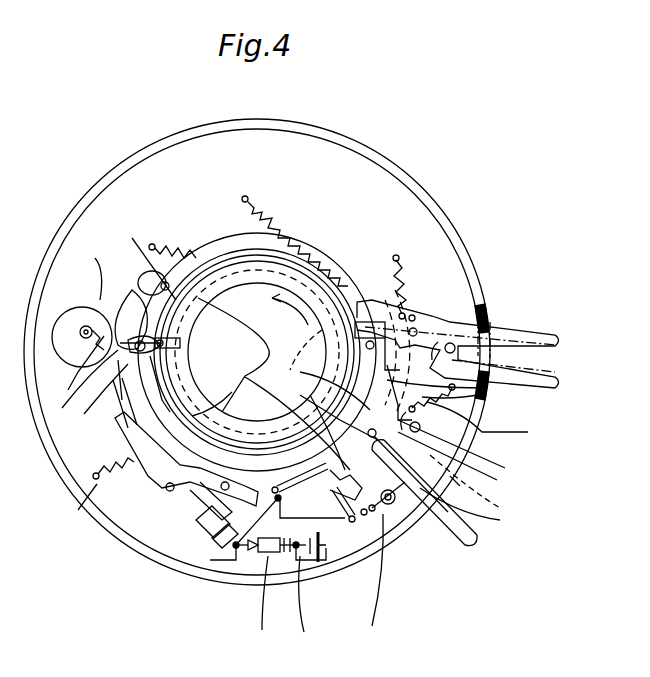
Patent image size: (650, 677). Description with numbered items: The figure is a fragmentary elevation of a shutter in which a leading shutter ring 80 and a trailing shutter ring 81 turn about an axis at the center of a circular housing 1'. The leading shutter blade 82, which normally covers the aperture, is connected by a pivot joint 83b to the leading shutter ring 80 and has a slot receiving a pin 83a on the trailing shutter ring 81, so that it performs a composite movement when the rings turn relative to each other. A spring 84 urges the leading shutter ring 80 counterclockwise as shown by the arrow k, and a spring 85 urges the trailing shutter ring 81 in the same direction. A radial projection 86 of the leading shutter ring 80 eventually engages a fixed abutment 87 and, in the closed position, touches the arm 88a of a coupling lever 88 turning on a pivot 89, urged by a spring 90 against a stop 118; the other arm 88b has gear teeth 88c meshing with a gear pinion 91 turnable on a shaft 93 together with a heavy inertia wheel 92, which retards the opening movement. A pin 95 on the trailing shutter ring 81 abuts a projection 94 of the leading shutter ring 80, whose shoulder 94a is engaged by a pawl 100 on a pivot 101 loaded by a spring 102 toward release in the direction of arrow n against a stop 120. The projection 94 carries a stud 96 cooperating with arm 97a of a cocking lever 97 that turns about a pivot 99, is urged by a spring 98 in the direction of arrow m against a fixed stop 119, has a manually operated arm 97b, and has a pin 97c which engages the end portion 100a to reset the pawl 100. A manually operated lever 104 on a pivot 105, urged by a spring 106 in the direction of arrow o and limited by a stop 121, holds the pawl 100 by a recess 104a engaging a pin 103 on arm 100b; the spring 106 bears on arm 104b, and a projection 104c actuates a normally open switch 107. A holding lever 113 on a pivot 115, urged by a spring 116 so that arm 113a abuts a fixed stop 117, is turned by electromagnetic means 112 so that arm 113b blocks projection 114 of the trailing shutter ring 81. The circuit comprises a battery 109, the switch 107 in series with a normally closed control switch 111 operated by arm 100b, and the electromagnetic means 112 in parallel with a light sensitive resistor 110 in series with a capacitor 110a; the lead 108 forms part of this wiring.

The circular housing 1' is at (257, 352).
The leading shutter ring 80 is at (316, 318).
The trailing shutter ring 81 is at (222, 247).
The leading shutter blade 82 is at (248, 382).
The pin 83a is at (146, 274).
The pivot joint 83b is at (206, 296).
The spring 84 is at (168, 244).
The spring 85 is at (262, 222).
The radial projection 86 is at (147, 258).
The fixed abutment 87 is at (132, 448).
The coupling lever 88 is at (86, 383).
The arm of coupling lever 88a is at (122, 366).
The other arm of coupling lever 88b is at (84, 271).
The gear teeth 88c is at (78, 368).
The pivot 89 is at (128, 318).
The spring 90 is at (103, 389).
The gear pinion 91 is at (84, 343).
The wheel 92 is at (80, 326).
The shaft 93 is at (93, 328).
The projection 94 is at (338, 372).
The shoulder 94a is at (501, 420).
The pin 95 is at (336, 394).
The projection stud 96 is at (354, 300).
The cocking lever 97 is at (418, 314).
The arm of cocking lever 97a is at (373, 300).
The other arm of cocking lever 97b is at (548, 380).
The pin 97c is at (432, 318).
The spring 98 is at (398, 256).
The pivot 99 is at (456, 346).
The pawl 100 is at (466, 458).
The end portion 100a is at (480, 394).
The arm of pawl 100b is at (456, 484).
The pivot 101 is at (421, 429).
The spring 102 is at (470, 441).
The pin 103 is at (268, 388).
The manually operated lever 104 is at (422, 520).
The recess 104a is at (460, 510).
The arm of manually operated lever 104b is at (462, 550).
The projection 104c is at (342, 509).
The pivot 105 is at (396, 520).
The spring 106 is at (378, 508).
The normally open switch 107 is at (308, 490).
The wire 108 is at (264, 598).
The battery 109 is at (304, 562).
The light sensitive resistor 110 is at (246, 562).
The capacitor 110a is at (311, 603).
The normally closed control switch 111 is at (302, 420).
The electromagnetic means 112 is at (196, 562).
The holding lever 113 is at (132, 470).
The arm of holding lever 113a is at (210, 502).
The arm of holding lever 113b is at (103, 460).
The projection 114 is at (110, 410).
The pivot 115 is at (166, 492).
The spring 116 is at (79, 508).
The fixed stop 117 is at (229, 487).
The stop 118 is at (181, 343).
The fixed stop 119 is at (412, 314).
The stop 120 is at (485, 486).
The stop 121 is at (370, 574).
The arrow k is at (285, 305).
The arrow m is at (432, 362).
The arrow n is at (396, 420).
The arrow o is at (415, 488).